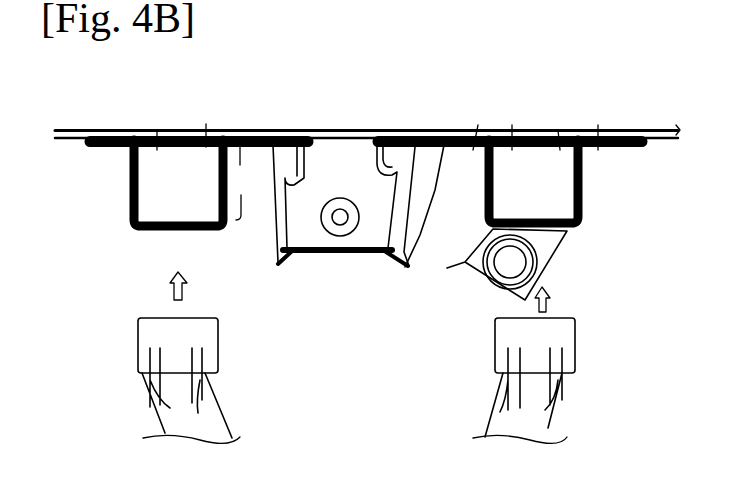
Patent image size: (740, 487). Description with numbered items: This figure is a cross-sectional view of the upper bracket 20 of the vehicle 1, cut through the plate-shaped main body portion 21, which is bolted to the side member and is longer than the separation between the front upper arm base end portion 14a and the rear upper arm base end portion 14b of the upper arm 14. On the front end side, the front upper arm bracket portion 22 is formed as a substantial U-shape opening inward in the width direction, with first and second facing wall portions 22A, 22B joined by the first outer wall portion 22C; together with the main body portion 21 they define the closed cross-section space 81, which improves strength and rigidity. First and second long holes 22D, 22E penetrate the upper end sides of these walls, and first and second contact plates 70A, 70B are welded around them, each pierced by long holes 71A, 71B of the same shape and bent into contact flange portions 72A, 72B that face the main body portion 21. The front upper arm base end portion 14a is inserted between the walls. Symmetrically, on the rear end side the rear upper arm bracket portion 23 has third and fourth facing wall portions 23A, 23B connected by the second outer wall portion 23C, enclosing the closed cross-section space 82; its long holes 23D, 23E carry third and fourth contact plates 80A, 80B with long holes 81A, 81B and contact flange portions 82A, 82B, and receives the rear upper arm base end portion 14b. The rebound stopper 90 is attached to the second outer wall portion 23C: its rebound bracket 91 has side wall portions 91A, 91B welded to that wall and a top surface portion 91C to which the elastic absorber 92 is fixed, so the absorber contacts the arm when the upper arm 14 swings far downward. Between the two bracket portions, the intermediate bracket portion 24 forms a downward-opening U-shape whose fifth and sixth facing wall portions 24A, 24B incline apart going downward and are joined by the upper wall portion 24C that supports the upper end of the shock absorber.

The vehicle door module 1 is at (55, 143).
The upper bracket 20 is at (367, 114).
The main body portion 21 is at (628, 143).
The front upper arm bracket portion 22 is at (194, 243).
The first facing wall portion 22A is at (157, 130).
The second facing wall portion 22B is at (206, 124).
The first outer wall portion 22C is at (147, 233).
The first long hole 22D is at (130, 188).
The second long hole 22E is at (232, 158).
The rear upper arm bracket portion 23 is at (600, 232).
The third facing wall portion 23A is at (512, 125).
The fourth facing wall portion 23B is at (558, 130).
The second outer wall portion 23C is at (556, 244).
The first long hole 23D is at (485, 190).
The second long hole 23E is at (584, 158).
The intermediate bracket portion 24 is at (338, 254).
The fifth facing wall portion 24A is at (273, 253).
The sixth facing wall portion 24B is at (403, 263).
The upper wall portion 24C is at (340, 199).
The first contact plate 70A is at (125, 204).
The second contact plate 70B is at (252, 126).
The long hole 71A is at (130, 160).
The long hole 71B is at (235, 189).
The contact flange portion 72A is at (124, 218).
The contact flange portion 72B is at (240, 222).
The third contact plate 80A is at (478, 125).
The fourth contact plate 80B is at (598, 125).
The first housing 81 is at (178, 183).
The long hole 81A is at (485, 155).
The long hole 81B is at (585, 193).
The second housing 82 is at (533, 181).
The contact flange portion 82A is at (483, 220).
The contact flange portion 82B is at (590, 218).
The rebound stopper 90 is at (496, 298).
The rebound bracket 91 is at (560, 266).
The side wall portion 91A is at (455, 262).
The side wall portion 91B is at (562, 266).
The top surface portion 91C is at (472, 268).
The absorber 92 is at (510, 262).
The upper arm 14 is at (355, 420).
The front upper arm base end portion 14a is at (138, 322).
The rear upper arm base end portion 14b is at (577, 325).